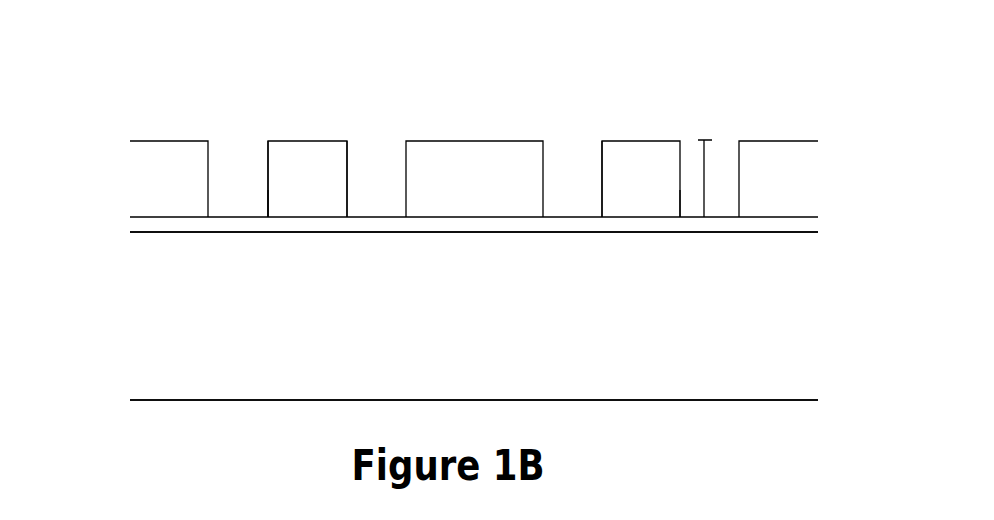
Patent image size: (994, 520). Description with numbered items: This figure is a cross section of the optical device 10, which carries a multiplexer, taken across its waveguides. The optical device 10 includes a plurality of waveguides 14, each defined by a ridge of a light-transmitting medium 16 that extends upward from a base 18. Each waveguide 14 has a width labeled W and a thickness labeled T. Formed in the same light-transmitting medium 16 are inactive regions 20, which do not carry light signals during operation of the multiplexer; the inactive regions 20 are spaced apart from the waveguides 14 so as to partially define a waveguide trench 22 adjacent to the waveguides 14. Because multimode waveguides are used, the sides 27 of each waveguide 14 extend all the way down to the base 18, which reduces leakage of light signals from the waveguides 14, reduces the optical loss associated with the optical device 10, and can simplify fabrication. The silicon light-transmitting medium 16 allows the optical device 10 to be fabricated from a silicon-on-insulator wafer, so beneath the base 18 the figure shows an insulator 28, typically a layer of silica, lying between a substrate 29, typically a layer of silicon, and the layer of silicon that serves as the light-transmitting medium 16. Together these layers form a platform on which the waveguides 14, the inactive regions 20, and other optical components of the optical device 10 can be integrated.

The optical device 10 is at (823, 108).
The waveguide 14 is at (302, 141).
The light-transmitting medium 16 is at (283, 177).
The base 18 is at (90, 218).
The inactive region 20 is at (462, 158).
The waveguide trench 22 is at (347, 168).
The side 27 is at (267, 200).
The insulator 28 is at (457, 225).
The substrate 29 is at (240, 377).
The width W is at (680, 118).
The thickness T is at (704, 172).